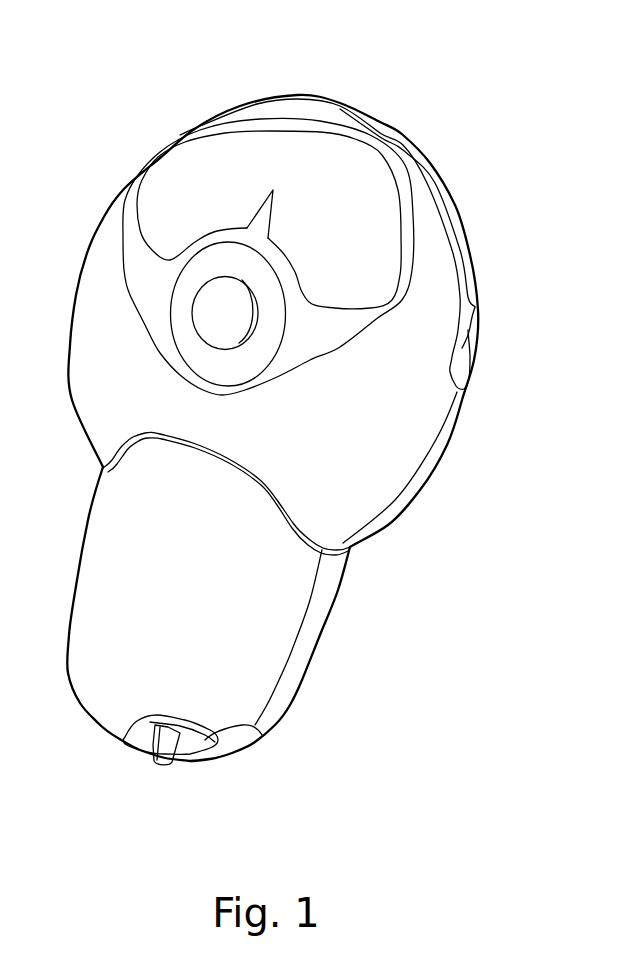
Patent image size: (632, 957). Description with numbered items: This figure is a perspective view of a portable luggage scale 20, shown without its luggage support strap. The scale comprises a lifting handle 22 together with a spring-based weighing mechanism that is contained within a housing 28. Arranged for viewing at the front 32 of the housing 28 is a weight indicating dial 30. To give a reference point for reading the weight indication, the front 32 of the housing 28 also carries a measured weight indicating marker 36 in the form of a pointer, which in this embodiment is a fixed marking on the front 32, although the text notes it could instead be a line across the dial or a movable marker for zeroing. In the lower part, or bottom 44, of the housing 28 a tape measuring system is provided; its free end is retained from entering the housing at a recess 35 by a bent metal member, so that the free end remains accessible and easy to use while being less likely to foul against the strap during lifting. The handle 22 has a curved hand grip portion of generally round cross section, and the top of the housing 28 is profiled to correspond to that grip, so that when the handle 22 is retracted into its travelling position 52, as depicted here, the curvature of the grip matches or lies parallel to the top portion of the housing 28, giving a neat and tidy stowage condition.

The portable luggage scale 20 is at (420, 112).
The lifting handle 22 is at (438, 185).
The housing 28 is at (100, 394).
The weight indicating dial 30 is at (308, 160).
The front 32 is at (314, 414).
The recess 35 is at (188, 744).
The measured weight indicating marker 36 is at (258, 213).
The bottom 44 is at (125, 745).
The travelling position 52 is at (497, 262).